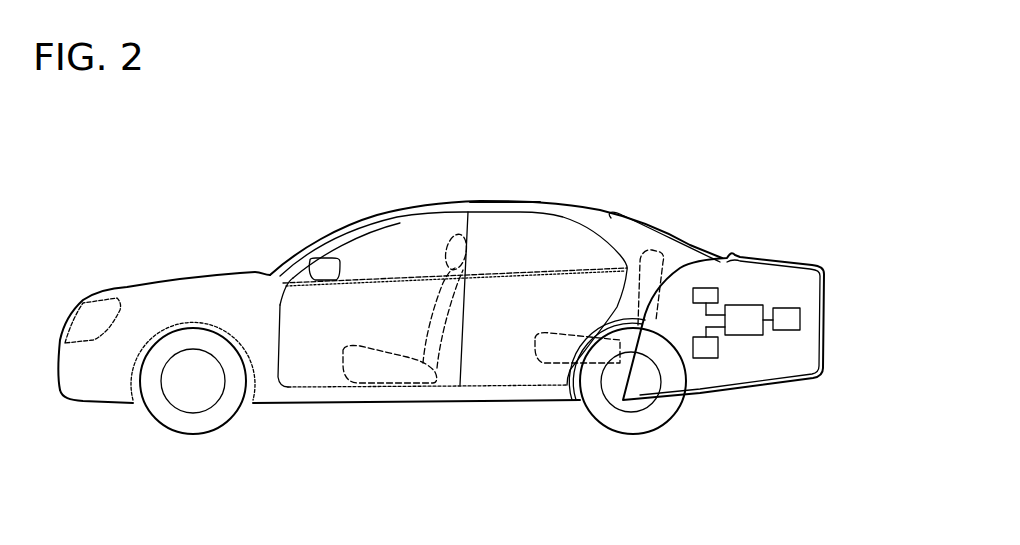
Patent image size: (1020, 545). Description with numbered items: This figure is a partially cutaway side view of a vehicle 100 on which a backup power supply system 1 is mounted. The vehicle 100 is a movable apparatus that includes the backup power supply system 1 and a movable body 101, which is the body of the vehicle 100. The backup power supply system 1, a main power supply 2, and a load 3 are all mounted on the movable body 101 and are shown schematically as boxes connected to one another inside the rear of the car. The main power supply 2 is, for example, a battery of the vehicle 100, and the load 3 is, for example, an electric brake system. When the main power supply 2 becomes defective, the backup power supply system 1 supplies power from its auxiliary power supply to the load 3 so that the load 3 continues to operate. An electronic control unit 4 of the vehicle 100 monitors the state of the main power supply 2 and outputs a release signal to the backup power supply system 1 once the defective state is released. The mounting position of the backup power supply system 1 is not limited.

The vehicle 100 is at (442, 301).
The movable body 101 is at (538, 204).
The backup power supply system 1 is at (752, 330).
The main power supply 2 is at (718, 293).
The load 3 is at (790, 320).
The electronic control unit (ECU) 4 is at (693, 348).